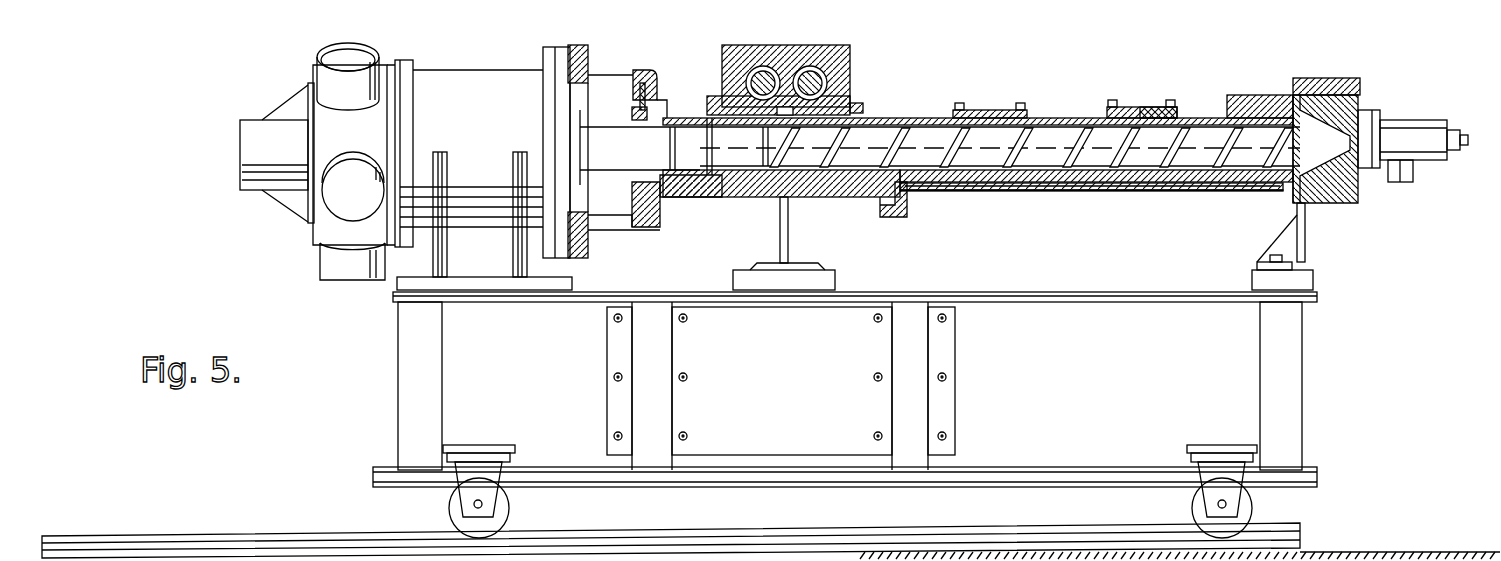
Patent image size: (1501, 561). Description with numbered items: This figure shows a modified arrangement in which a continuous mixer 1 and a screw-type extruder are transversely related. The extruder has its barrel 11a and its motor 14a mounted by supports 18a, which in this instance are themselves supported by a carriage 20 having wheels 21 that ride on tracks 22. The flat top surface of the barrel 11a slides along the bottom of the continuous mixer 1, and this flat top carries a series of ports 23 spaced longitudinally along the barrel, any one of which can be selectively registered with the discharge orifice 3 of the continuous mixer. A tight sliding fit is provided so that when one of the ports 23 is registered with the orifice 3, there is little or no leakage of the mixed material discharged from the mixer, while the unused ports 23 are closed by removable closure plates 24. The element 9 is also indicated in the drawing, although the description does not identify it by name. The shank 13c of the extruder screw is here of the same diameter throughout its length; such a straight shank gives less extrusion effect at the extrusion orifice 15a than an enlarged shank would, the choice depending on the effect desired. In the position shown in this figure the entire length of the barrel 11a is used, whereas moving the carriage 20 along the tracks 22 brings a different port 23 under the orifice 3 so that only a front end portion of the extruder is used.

The continuous mixer 1 is at (858, 65).
The discharge orifice 3 is at (722, 97).
The barrel 9 is at (785, 30).
The barrel 11a is at (1050, 110).
The shank 13c is at (1143, 190).
The motor 14a is at (477, 84).
The extrusion orifice 15a is at (1356, 118).
The supports 18a is at (525, 262).
The carriage 20 is at (1078, 290).
The wheels 21 is at (446, 510).
The tracks 22 is at (230, 535).
The ports 23 is at (850, 98).
The removable closure plates 24 is at (1157, 105).